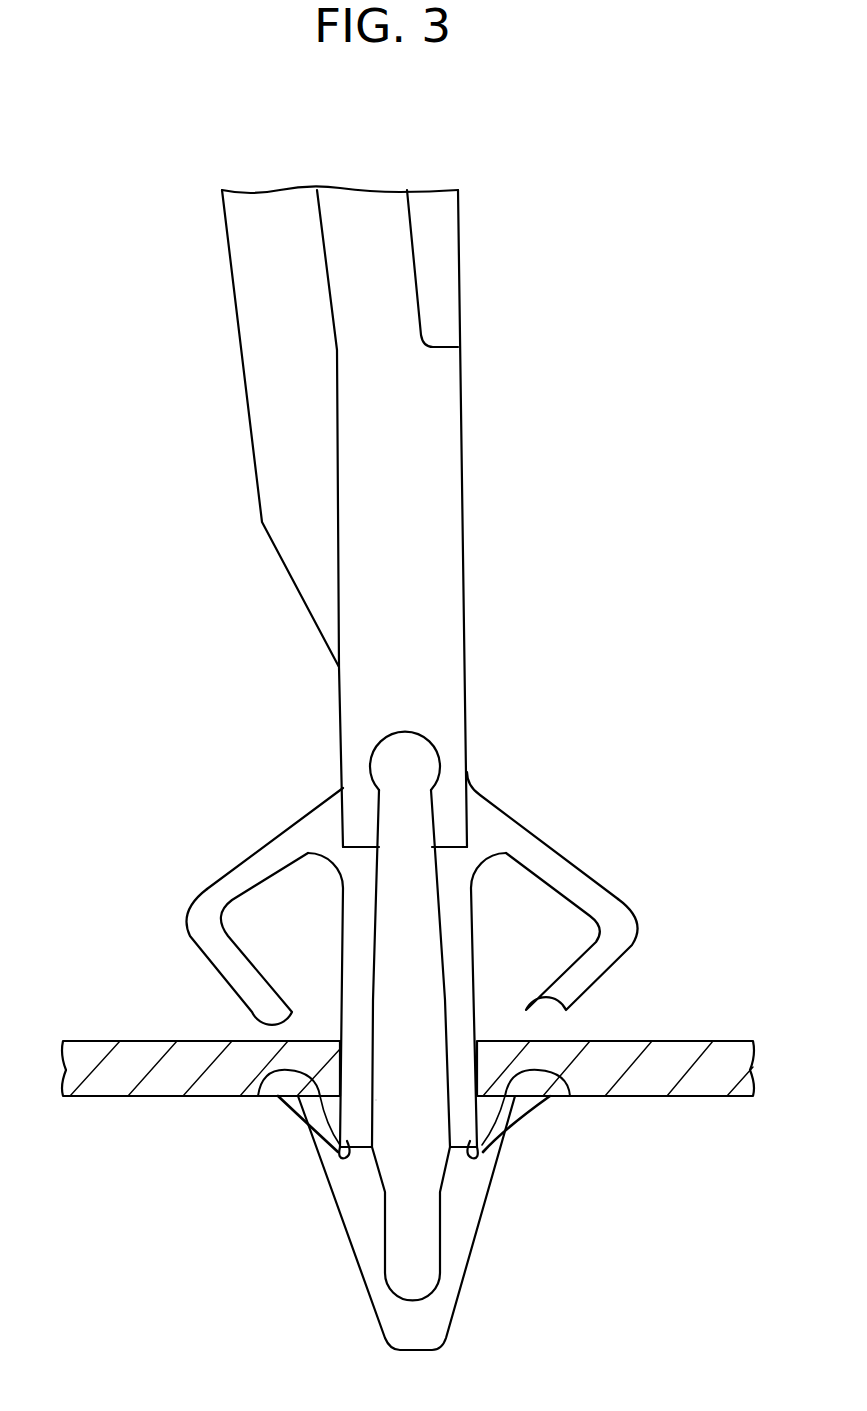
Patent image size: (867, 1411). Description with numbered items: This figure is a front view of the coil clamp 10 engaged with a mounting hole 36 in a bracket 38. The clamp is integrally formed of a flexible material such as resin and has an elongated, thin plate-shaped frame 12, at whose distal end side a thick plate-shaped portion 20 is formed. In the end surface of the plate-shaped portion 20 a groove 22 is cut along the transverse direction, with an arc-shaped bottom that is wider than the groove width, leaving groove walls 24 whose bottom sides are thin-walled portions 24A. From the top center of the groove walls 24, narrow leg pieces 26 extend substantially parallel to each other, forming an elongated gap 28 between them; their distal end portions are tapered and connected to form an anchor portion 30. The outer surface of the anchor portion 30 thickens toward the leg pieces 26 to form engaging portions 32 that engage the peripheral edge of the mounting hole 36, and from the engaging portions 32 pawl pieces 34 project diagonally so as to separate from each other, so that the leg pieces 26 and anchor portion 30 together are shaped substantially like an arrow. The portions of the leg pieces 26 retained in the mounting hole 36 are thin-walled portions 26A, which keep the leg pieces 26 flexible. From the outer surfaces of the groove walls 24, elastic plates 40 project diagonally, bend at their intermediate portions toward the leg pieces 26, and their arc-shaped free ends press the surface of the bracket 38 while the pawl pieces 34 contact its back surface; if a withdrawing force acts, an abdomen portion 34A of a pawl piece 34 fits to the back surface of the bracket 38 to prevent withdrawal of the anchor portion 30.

The coil clamp 10 is at (522, 371).
The frame 12 is at (392, 242).
The plate-shaped portion 20 is at (442, 447).
The groove 22 is at (428, 801).
The groove walls 24 is at (363, 798).
The thin-walled portions 24A is at (362, 748).
The leg pieces 26 is at (352, 888).
The thin-walled portions 26A is at (322, 1040).
The gap 28 is at (406, 937).
The anchor portion 30 is at (472, 1234).
The engaging portions 32 is at (322, 1155).
The pawl pieces 34 is at (302, 1118).
The abdomen portion 34A is at (258, 1096).
The mounting hole 36 is at (352, 1068).
The bracket 38 is at (687, 1048).
The elastic plates 40 is at (223, 873).